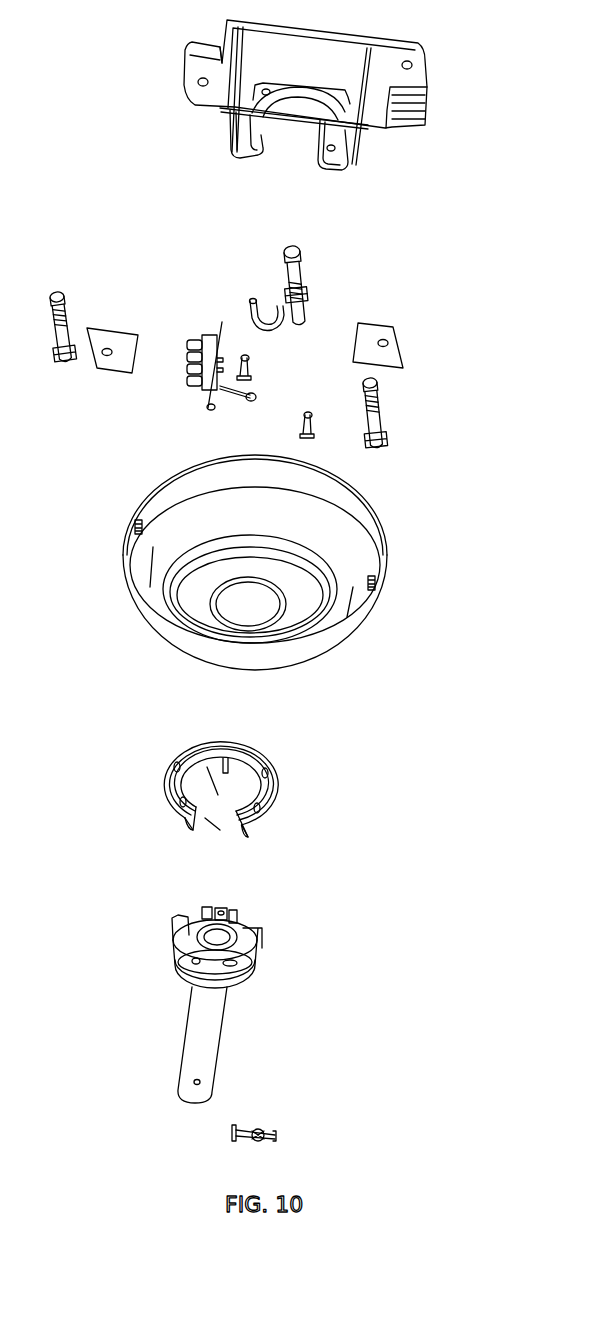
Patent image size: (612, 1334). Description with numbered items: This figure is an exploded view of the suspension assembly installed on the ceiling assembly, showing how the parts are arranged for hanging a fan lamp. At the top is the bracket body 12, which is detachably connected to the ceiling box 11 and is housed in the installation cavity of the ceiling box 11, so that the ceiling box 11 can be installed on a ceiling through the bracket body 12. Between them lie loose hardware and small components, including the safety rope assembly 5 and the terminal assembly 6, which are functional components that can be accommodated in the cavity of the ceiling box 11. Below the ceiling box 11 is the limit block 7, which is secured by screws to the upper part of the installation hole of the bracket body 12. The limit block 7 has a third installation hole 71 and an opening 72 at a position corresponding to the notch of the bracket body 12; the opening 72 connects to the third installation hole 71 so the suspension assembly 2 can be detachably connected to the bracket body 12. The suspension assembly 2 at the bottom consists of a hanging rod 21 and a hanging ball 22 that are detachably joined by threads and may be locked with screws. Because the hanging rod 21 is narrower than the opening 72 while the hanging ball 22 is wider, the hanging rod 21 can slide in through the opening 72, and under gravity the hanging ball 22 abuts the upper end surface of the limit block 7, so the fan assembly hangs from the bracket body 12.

The bracket body 12 is at (415, 87).
The safety rope assembly 5 is at (290, 260).
The terminal assembly 6 is at (197, 392).
The ceiling box 11 is at (367, 538).
The limit block 7 is at (236, 779).
The third installation hole 71 is at (192, 747).
The opening 72 is at (168, 803).
The suspension assembly 2 is at (168, 1005).
The hanging ball 22 is at (175, 953).
The hanging rod 21 is at (207, 1033).